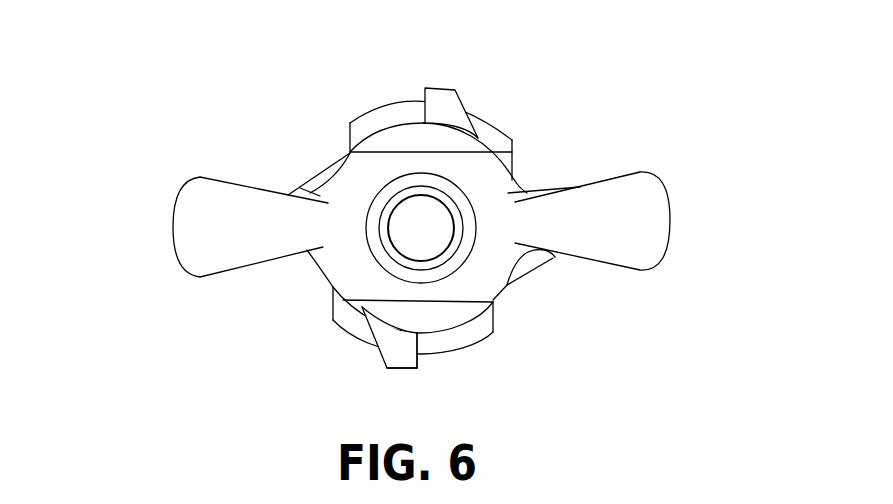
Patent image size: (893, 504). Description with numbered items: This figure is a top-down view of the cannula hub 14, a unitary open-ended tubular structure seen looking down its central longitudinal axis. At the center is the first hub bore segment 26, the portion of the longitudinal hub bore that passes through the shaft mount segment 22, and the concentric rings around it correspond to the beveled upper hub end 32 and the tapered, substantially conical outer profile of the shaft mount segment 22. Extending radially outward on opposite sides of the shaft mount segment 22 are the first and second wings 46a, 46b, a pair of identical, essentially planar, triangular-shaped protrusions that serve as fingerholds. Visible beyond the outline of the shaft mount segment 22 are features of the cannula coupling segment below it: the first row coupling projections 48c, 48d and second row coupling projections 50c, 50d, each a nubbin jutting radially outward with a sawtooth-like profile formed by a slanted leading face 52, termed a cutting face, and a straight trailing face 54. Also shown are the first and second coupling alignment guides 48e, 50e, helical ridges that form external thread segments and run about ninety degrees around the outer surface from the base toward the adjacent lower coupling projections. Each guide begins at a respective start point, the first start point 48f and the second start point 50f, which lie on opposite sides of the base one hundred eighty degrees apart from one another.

The cannula hub 14 is at (160, 106).
The shaft mount segment 22 is at (520, 187).
The first hub bore segment 26 is at (421, 228).
The upper hub end 32 is at (470, 260).
The first wing 46a is at (667, 198).
The second wing 46b is at (173, 226).
The first row coupling projection 48c is at (307, 183).
The first row coupling projection 48d is at (400, 370).
The first coupling alignment guide 48e is at (355, 337).
The first start point 48f is at (327, 305).
The second row coupling projection 50c is at (548, 268).
The second row coupling projection 50d is at (442, 87).
The second coupling alignment guide 50e is at (370, 108).
The second start point 50f is at (520, 148).
The leading face 52 is at (380, 357).
The trailing face 54 is at (417, 360).